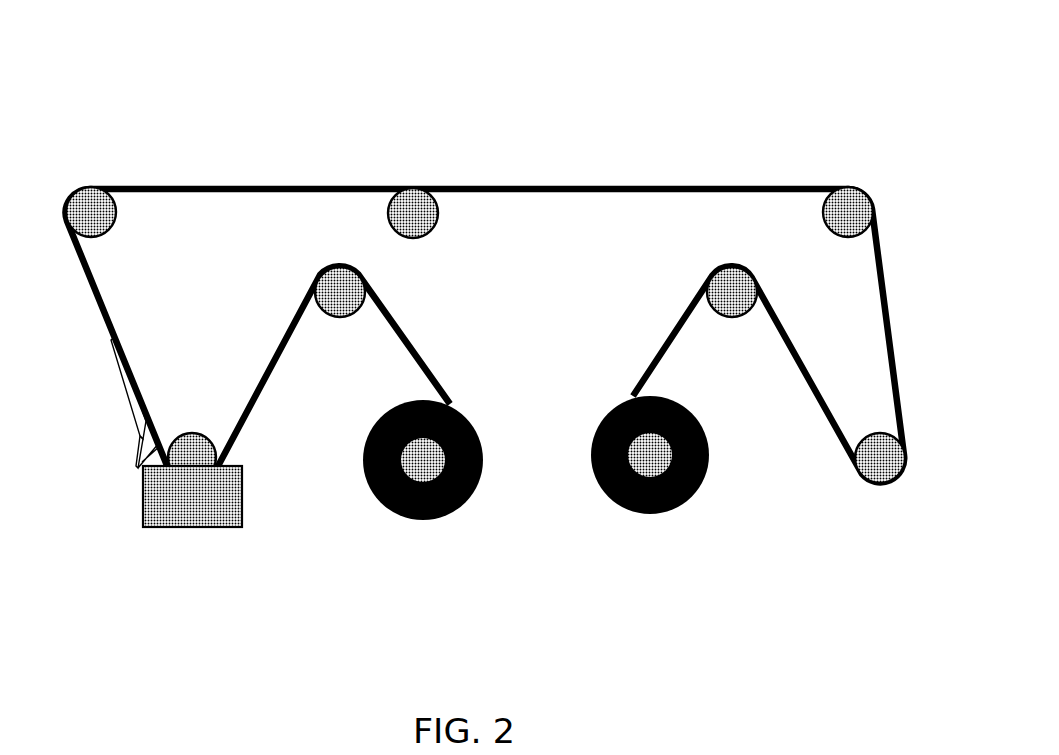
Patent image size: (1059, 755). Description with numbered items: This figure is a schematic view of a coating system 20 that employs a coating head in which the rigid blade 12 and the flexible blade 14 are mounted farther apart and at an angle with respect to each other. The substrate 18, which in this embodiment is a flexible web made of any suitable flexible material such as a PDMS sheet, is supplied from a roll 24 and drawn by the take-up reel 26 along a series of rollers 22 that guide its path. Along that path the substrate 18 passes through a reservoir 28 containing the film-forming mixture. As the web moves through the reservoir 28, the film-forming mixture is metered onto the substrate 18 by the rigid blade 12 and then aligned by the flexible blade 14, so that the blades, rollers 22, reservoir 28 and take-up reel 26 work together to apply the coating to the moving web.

The rigid blade 12 is at (146, 453).
The flexible blade 14 is at (137, 391).
The substrate 18 is at (280, 185).
The coating system 20 is at (641, 153).
The rollers 22 is at (412, 208).
The supply roll 24 is at (445, 517).
The take-up reel 26 is at (677, 507).
The reservoir 28 is at (228, 515).